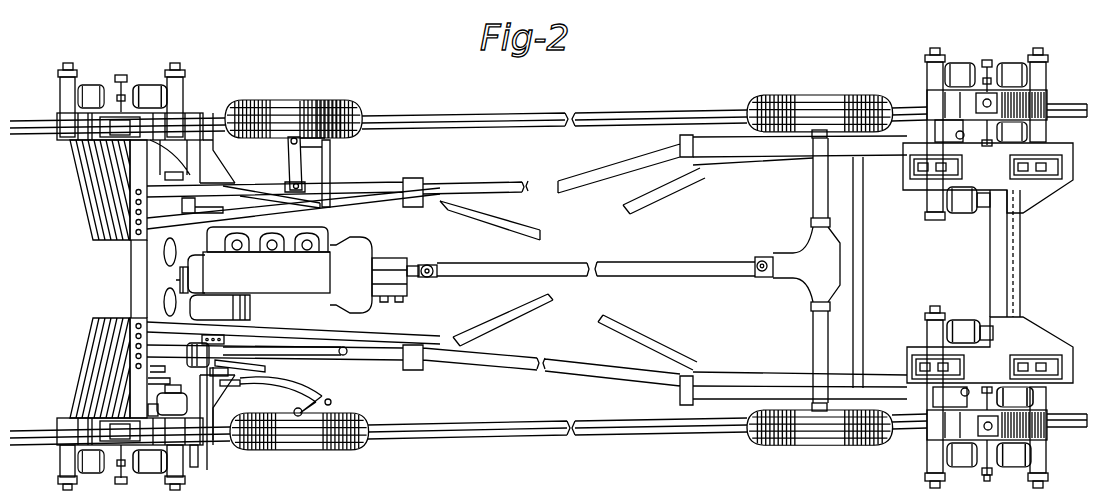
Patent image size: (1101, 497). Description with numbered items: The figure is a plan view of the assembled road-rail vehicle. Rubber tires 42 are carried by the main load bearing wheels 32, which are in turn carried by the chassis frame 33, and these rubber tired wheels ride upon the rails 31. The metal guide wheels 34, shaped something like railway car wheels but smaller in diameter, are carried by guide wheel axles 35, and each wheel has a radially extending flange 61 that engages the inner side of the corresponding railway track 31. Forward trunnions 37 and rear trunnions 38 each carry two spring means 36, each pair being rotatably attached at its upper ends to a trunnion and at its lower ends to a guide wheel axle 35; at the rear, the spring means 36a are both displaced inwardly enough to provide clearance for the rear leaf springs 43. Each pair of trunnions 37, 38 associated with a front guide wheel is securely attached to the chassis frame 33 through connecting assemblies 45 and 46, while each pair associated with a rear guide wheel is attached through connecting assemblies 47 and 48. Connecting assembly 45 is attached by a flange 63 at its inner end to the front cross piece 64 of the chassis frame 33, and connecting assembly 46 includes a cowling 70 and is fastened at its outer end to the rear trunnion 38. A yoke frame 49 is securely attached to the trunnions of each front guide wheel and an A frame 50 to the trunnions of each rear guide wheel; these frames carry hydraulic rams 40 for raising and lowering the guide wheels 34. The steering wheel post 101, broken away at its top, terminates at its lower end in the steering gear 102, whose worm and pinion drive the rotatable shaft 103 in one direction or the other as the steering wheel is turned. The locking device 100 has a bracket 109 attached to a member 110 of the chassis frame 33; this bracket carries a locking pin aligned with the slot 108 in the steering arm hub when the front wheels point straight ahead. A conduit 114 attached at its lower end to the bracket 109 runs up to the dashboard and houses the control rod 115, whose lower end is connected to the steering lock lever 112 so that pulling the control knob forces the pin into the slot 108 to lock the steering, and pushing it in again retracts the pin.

The rails 31 is at (638, 113).
The main load bearing wheels 32 is at (288, 102).
The chassis frame 33 is at (575, 178).
The guide wheels 34 is at (1047, 100).
The guide wheel axles 35 is at (128, 79).
The spring means 36 is at (88, 86).
The spring means 36a is at (960, 214).
The forward trunnions 37 is at (62, 70).
The rear trunnions 38 is at (185, 72).
The hydraulic rams 40 is at (125, 420).
The rubber tires 42 is at (352, 96).
The rear leaf springs 43 is at (788, 150).
The connecting assembly 45 is at (80, 206).
The connecting assembly 46 is at (214, 170).
The connecting assembly 47 is at (920, 359).
The connecting assembly 48 is at (1041, 329).
The yoke frame 49 is at (198, 460).
The A frame 50 is at (935, 430).
The radially extending flange 61 is at (1048, 112).
The flange 63 is at (132, 320).
The front cross piece 64 is at (131, 268).
The cowling 70 is at (150, 412).
The locking device 100 is at (240, 335).
The steering wheel post 101 is at (344, 356).
The steering gear 102 is at (187, 350).
The rotatable shaft 103 is at (215, 380).
The slot 108 is at (262, 384).
The bracket 109 is at (135, 356).
The member 110 is at (258, 364).
The steering lock lever 112 is at (150, 372).
The conduit 114 is at (236, 378).
The control rod 115 is at (240, 390).